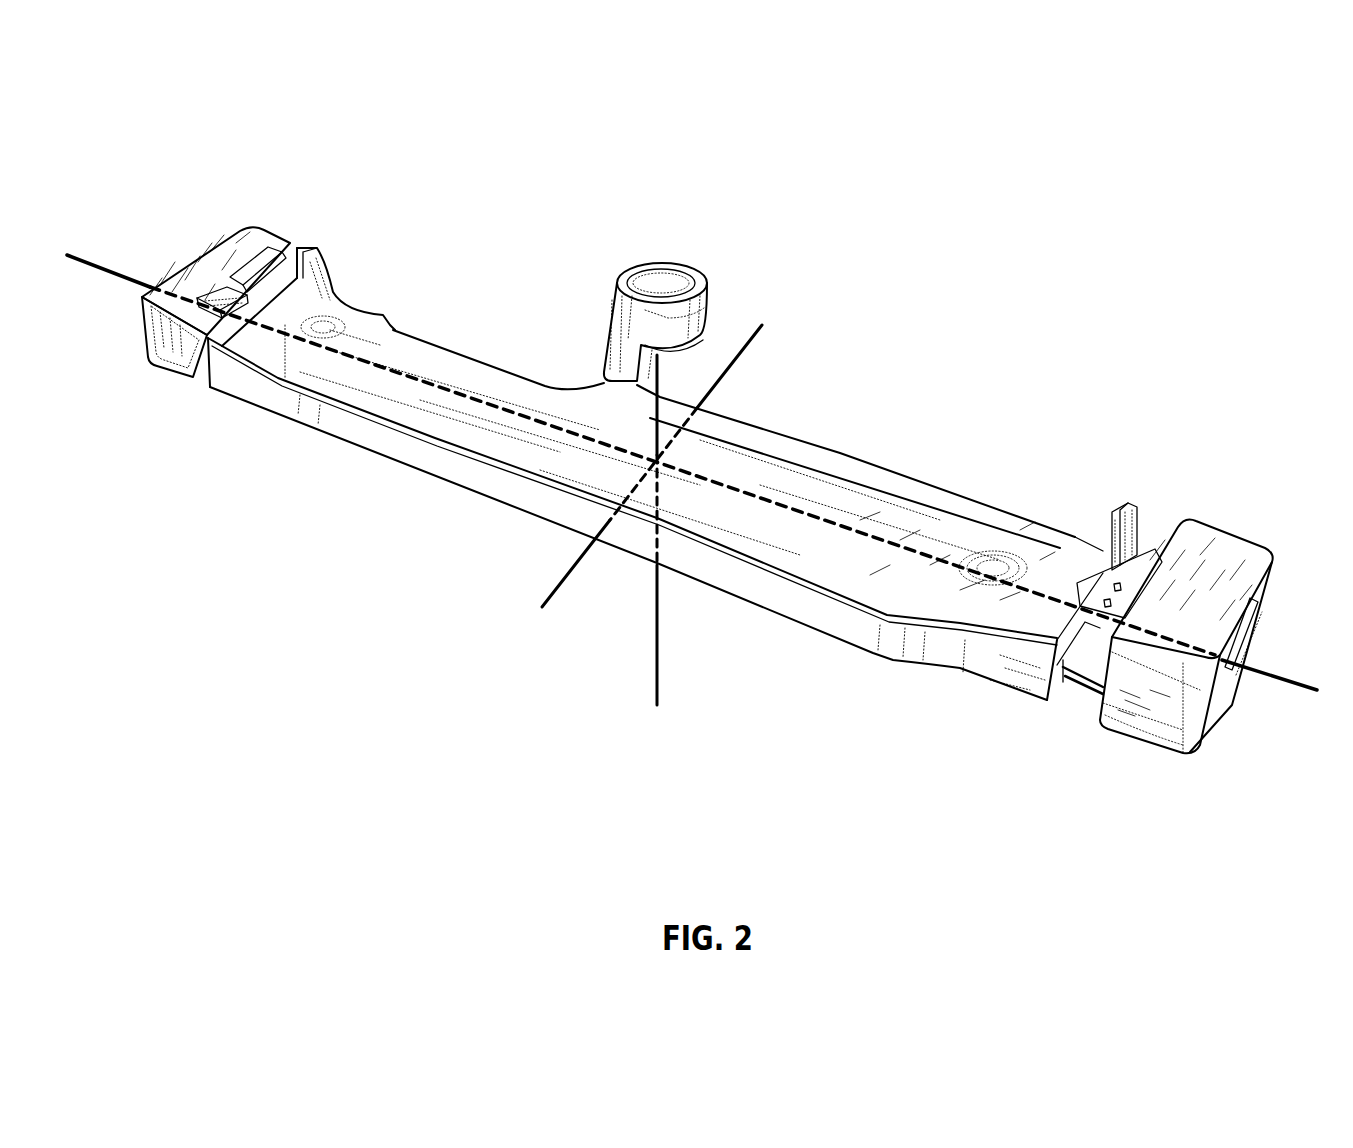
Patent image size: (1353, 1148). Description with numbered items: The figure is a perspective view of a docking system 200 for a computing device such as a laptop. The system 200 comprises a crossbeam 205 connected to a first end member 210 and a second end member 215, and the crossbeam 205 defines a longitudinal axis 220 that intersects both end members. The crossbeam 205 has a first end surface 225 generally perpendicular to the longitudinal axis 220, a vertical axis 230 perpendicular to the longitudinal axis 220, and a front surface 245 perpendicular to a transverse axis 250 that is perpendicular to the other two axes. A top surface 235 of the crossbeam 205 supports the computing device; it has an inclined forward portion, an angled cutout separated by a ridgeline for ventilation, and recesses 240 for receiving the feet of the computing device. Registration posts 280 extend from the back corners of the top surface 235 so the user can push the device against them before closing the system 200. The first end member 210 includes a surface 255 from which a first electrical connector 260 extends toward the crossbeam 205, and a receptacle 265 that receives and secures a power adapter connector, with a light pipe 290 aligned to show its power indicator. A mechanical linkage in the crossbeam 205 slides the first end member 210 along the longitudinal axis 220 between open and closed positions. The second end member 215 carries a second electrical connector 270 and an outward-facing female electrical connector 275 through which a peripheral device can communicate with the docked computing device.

The system 200 is at (1086, 195).
The crossbeam 205 is at (216, 384).
The first end member 210 is at (276, 231).
The second end member 215 is at (1098, 717).
The longitudinal axis 220 is at (1290, 680).
The first end surface 225 is at (1090, 640).
The vertical axis 230 is at (651, 679).
The top surface 235 is at (731, 460).
The recesses 240 is at (991, 565).
The front surface 245 is at (487, 484).
The transverse axis 250 is at (766, 336).
The surface 255 is at (200, 320).
The first electrical connector 260 is at (215, 296).
The receptacle 265 is at (296, 248).
The second electrical connector 270 is at (1099, 582).
The outward-facing female electrical connector 275 is at (1250, 633).
The registration posts 280 is at (328, 258).
The light pipe 290 is at (256, 257).